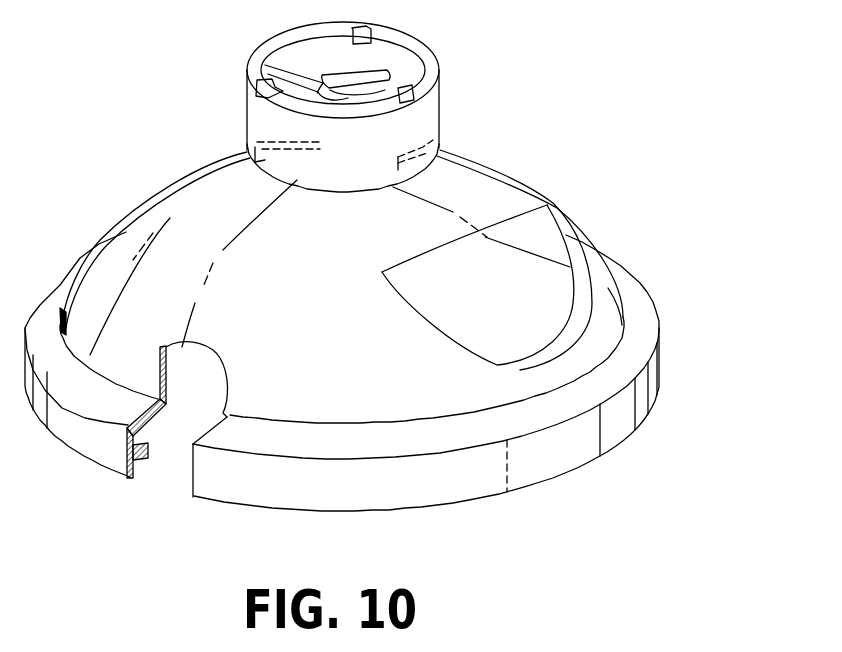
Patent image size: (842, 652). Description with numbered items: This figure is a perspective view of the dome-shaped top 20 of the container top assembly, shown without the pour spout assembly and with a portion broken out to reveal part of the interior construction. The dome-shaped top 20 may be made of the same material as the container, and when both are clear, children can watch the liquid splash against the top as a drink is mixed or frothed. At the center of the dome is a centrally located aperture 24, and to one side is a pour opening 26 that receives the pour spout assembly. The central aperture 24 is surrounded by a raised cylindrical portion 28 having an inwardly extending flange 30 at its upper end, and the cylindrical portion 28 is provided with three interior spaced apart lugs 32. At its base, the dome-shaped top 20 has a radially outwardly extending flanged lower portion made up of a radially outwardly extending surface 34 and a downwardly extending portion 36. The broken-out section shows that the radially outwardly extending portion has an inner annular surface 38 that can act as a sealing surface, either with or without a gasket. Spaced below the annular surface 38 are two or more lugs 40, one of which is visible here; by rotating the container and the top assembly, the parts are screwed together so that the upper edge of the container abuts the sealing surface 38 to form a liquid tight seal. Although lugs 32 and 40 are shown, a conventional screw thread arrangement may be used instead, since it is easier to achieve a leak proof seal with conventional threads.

The dome-shaped top 20 is at (568, 173).
The centrally located aperture 24 is at (347, 93).
The pour opening 26 is at (418, 323).
The raised cylindrical portion 28 is at (428, 113).
The inwardly extending flange 30 is at (322, 28).
The interior spaced apart lugs 32 is at (337, 78).
The radially outwardly extending surface 34 is at (642, 315).
The downwardly extending portion 36 is at (618, 426).
The inner annular surface 38 is at (158, 402).
The lugs 40 is at (143, 457).